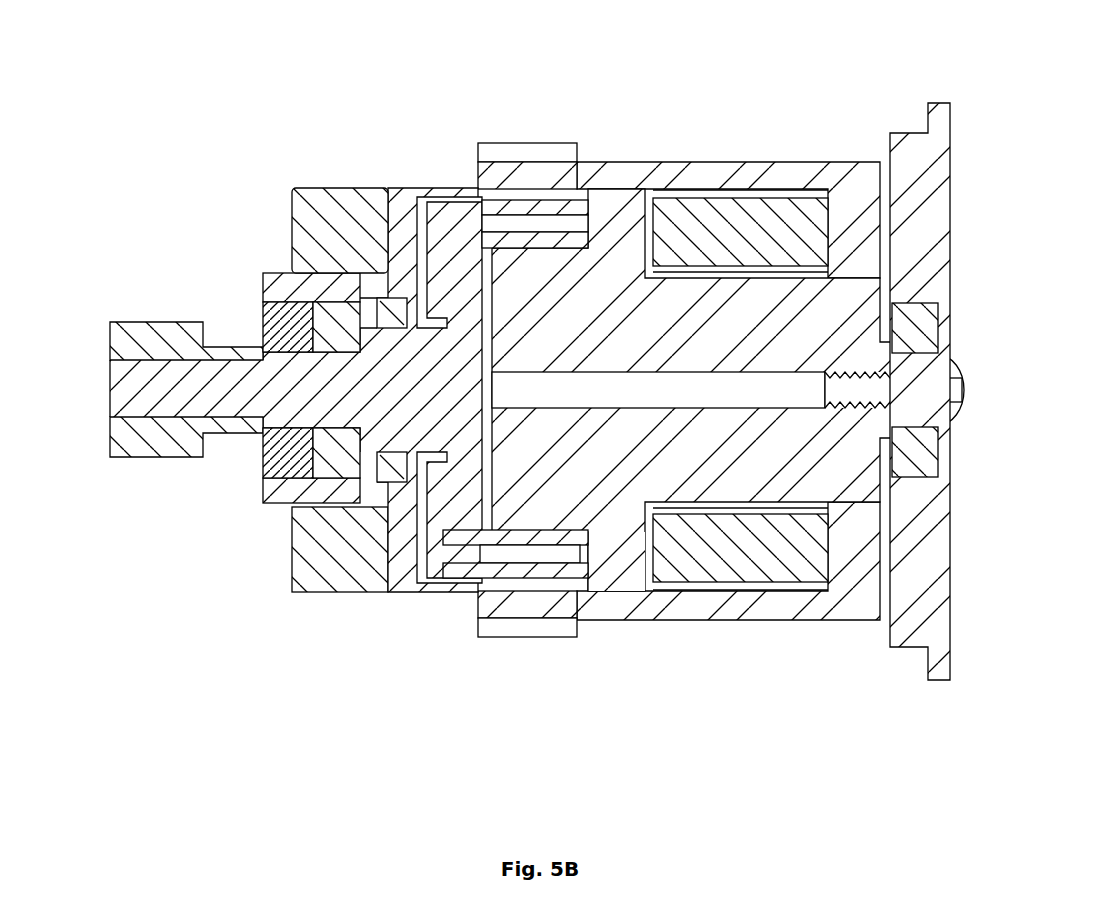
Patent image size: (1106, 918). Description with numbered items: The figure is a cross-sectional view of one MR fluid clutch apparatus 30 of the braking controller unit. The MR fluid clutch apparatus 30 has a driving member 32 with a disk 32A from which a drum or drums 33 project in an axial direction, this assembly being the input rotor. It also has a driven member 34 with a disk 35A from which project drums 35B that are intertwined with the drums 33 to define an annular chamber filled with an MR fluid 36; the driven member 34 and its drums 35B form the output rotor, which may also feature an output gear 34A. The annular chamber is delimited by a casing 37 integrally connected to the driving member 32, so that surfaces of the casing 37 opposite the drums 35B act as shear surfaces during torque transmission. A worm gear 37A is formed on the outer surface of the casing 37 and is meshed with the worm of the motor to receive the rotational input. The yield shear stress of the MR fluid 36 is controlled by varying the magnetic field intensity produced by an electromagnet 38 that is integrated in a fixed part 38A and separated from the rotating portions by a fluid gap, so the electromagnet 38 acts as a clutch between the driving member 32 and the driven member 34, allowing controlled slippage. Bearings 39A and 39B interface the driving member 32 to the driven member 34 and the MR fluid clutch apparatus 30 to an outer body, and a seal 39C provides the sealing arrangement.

The MR fluid clutch apparatus 30 is at (200, 117).
The driving member 32 is at (787, 463).
The disk 32A is at (638, 577).
The drum 33 is at (537, 558).
The driven member 34 is at (323, 393).
The output gear 34A is at (145, 443).
The disk 35A is at (440, 480).
The drums 35B is at (557, 230).
The MR fluid 36 is at (422, 525).
The casing 37 is at (800, 167).
The worm gear 37A is at (498, 140).
The electromagnet 38 is at (733, 207).
The fixed part 38A is at (925, 222).
The bearing 39A is at (922, 328).
The bearing 39B is at (285, 337).
The seal 39C is at (327, 315).